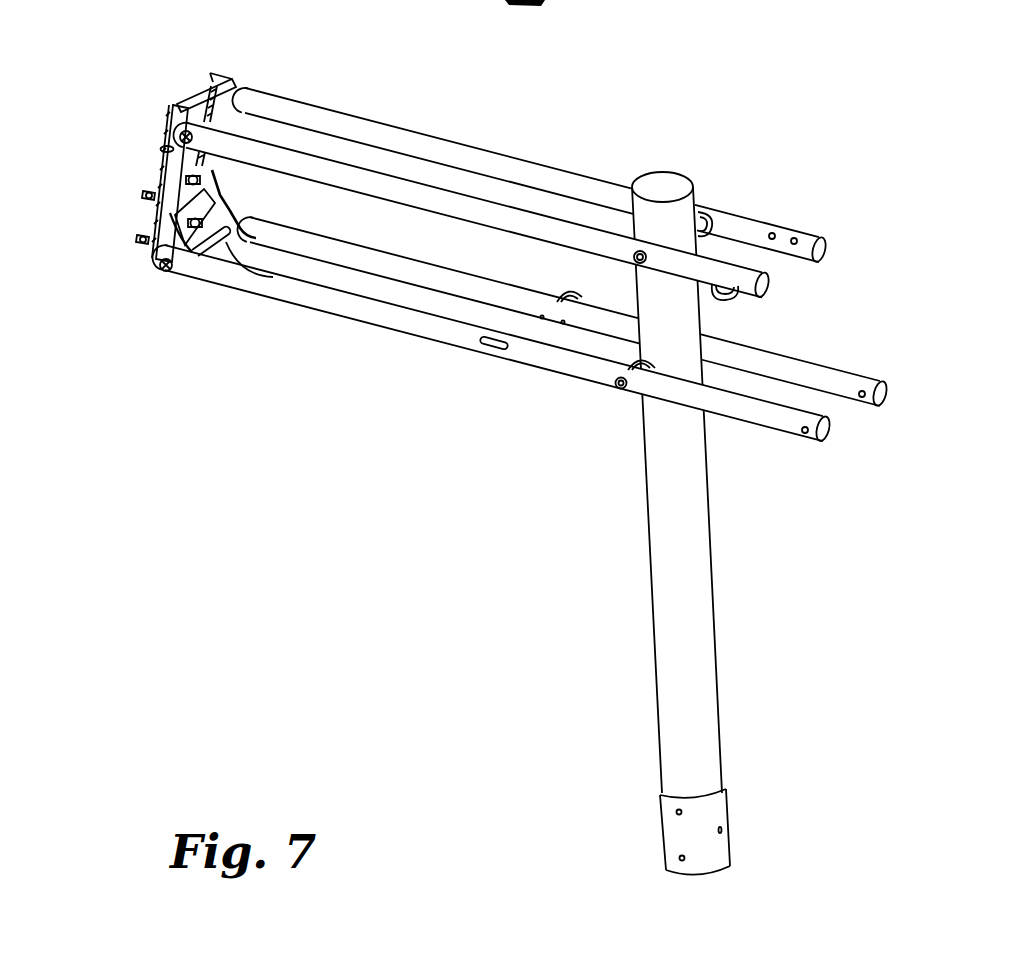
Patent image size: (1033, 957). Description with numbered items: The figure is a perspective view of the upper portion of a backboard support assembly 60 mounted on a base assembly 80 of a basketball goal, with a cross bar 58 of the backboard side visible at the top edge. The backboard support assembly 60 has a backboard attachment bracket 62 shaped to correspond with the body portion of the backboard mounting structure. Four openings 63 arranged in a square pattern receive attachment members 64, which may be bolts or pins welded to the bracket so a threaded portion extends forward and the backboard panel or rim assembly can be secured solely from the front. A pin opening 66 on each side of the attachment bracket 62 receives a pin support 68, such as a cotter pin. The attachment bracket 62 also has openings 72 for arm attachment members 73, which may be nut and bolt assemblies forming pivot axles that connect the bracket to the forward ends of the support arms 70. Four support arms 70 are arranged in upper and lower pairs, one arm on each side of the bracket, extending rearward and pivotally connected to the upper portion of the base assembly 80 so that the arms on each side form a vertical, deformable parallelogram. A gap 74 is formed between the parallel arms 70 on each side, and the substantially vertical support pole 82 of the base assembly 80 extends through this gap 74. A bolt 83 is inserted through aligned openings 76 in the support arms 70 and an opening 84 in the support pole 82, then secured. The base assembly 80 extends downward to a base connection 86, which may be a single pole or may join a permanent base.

The cross bar 58 is at (445, 1).
The backboard support assembly 60 is at (527, 234).
The backboard attachment bracket 62 is at (172, 183).
The openings 63 is at (214, 174).
The attachment members 64 is at (149, 198).
The pin openings 66 is at (169, 132).
The pin supports 68 is at (163, 147).
The support arms 70 is at (527, 252).
The openings 72 is at (237, 88).
The arm attachment members 73 is at (213, 117).
The gap 74 is at (461, 182).
The openings 76 is at (611, 302).
The base assembly 80 is at (665, 474).
The support pole 82 is at (695, 535).
The bolt 83 is at (642, 255).
The opening 84 is at (674, 230).
The base connection 86 is at (713, 847).